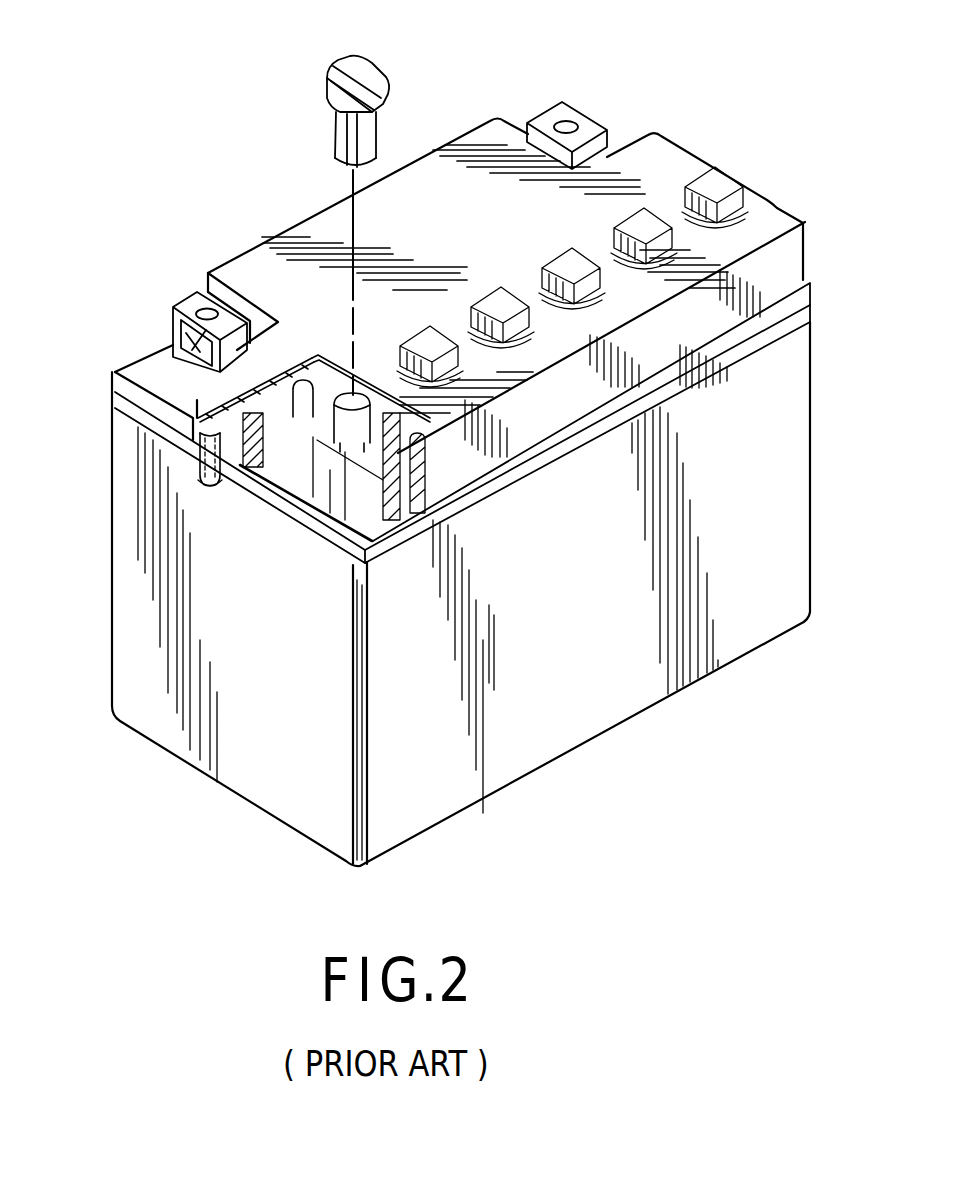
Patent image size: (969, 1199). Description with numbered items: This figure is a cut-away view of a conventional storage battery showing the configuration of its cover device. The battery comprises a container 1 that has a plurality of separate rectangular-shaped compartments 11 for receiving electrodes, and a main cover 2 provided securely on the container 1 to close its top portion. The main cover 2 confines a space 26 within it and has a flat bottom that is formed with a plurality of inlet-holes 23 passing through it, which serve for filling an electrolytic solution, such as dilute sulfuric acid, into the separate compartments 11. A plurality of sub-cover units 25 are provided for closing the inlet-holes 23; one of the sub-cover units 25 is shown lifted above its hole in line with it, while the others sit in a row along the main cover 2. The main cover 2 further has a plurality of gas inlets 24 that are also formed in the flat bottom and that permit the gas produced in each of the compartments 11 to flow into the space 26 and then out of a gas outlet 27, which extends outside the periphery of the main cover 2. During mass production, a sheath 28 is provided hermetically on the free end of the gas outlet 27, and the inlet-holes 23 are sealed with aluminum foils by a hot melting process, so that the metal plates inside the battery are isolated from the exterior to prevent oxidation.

The container 1 is at (262, 785).
The main cover 2 is at (295, 226).
The compartments 11 is at (347, 493).
The inlet-holes 23 is at (276, 490).
The gas inlets 24 is at (255, 400).
The sub-cover units 25 is at (368, 75).
The space 26 is at (188, 352).
The gas outlet 27 is at (197, 452).
The sheath 28 is at (200, 487).